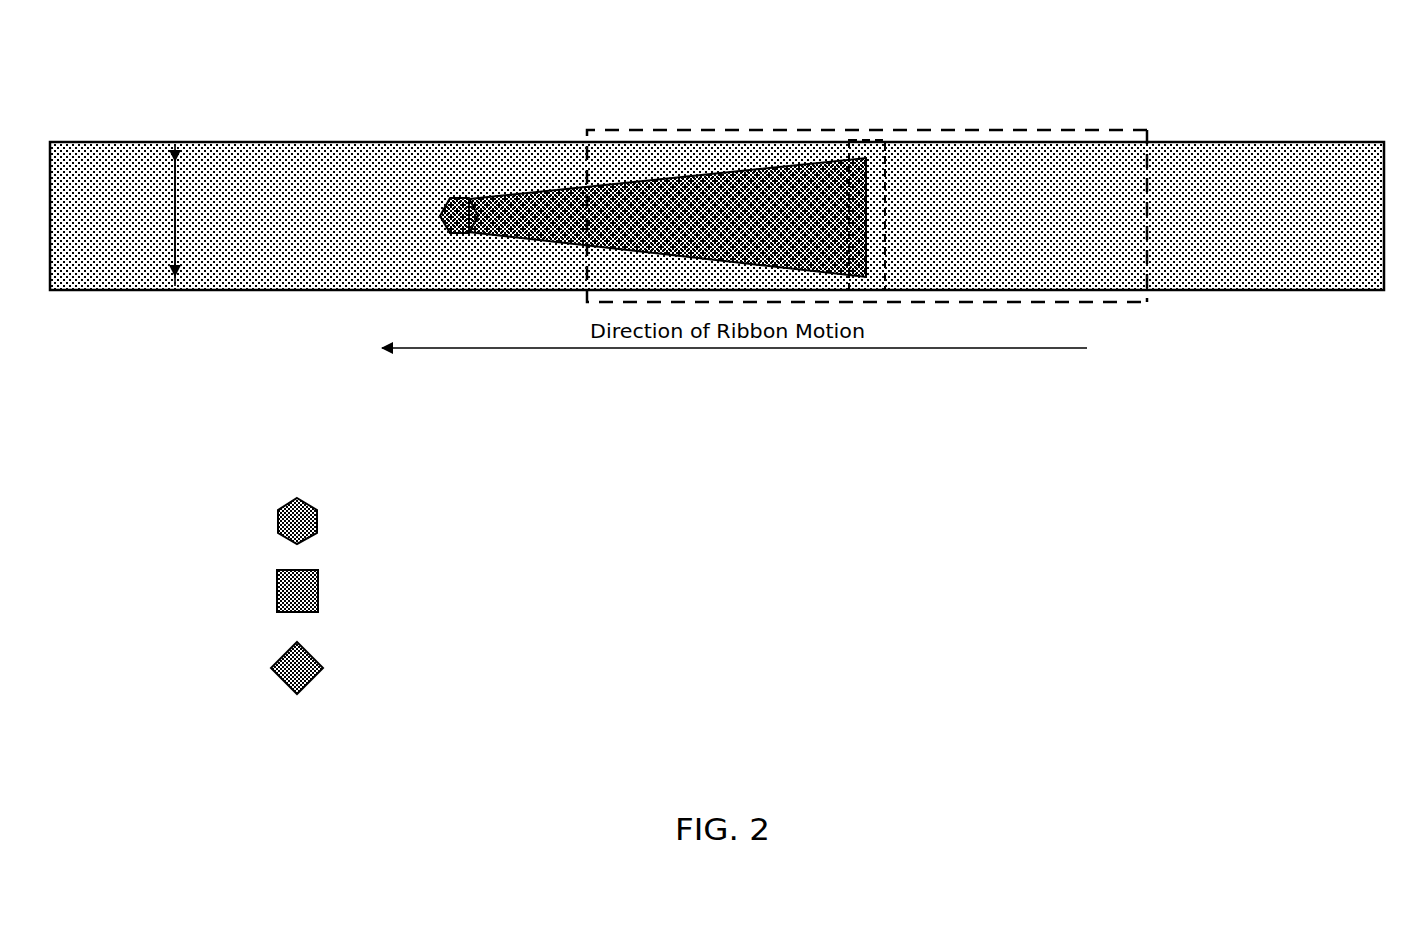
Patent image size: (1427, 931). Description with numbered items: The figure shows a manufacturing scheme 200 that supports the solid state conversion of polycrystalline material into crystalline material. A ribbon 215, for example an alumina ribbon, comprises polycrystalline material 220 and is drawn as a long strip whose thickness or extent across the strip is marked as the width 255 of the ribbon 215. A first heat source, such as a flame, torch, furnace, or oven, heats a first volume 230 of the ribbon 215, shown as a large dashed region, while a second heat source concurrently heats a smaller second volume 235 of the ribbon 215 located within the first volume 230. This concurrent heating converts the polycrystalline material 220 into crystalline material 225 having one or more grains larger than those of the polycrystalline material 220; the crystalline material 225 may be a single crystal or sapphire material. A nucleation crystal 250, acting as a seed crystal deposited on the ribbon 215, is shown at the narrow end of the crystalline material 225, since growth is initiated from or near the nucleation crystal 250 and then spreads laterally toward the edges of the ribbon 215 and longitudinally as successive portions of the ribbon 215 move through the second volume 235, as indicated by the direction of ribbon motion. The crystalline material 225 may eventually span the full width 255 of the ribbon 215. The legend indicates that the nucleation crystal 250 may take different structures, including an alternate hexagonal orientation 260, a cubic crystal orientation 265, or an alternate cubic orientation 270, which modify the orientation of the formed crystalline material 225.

The manufacturing scheme 200 is at (1236, 785).
The ribbon 215 is at (112, 141).
The polycrystalline material 220 is at (1311, 168).
The crystalline material 225 is at (742, 193).
The first volume 230 is at (1075, 129).
The second volume 235 is at (862, 140).
The nucleation crystal 250 is at (497, 280).
The width 255 is at (175, 228).
The alternate hexagonal orientation 260 is at (887, 533).
The cubic crystal orientation 265 is at (617, 601).
The alternate cubic orientation 270 is at (838, 675).